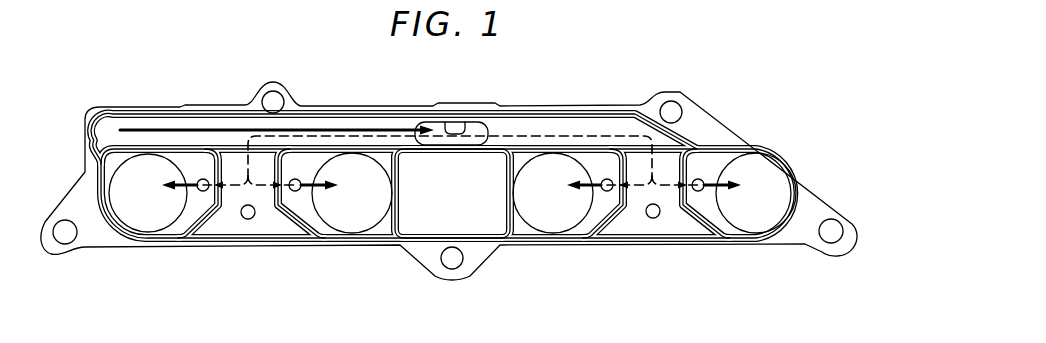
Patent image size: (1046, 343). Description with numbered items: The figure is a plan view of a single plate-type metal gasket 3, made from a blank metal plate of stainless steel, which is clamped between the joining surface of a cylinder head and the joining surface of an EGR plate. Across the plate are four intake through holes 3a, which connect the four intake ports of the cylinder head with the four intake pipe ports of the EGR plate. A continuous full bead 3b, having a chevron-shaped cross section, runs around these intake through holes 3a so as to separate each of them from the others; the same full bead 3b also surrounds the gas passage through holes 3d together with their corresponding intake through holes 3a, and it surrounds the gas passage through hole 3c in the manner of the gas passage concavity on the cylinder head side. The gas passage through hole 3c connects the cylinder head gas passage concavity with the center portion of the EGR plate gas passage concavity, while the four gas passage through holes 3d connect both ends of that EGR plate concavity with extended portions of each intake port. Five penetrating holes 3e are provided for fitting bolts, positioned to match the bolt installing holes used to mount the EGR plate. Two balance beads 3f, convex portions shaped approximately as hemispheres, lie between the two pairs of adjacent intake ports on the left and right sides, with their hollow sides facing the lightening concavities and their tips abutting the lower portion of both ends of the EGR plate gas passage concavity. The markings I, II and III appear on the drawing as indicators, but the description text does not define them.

The metal gasket 3 is at (724, 110).
The intake through holes 3a is at (118, 220).
The full bead 3b is at (803, 167).
The gas passage through hole 3c is at (469, 122).
The gas passage through holes 3d is at (205, 191).
The penetrating holes for fitting bolts 3e is at (274, 91).
The balance beads 3f is at (250, 219).
The flow direction arrow I is at (214, 130).
The flow path II is at (360, 136).
The flow paths III is at (180, 191).